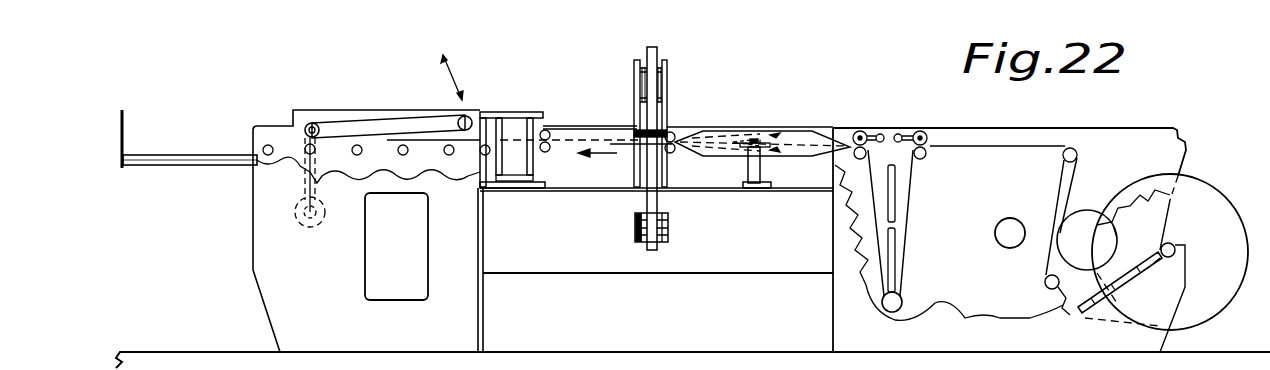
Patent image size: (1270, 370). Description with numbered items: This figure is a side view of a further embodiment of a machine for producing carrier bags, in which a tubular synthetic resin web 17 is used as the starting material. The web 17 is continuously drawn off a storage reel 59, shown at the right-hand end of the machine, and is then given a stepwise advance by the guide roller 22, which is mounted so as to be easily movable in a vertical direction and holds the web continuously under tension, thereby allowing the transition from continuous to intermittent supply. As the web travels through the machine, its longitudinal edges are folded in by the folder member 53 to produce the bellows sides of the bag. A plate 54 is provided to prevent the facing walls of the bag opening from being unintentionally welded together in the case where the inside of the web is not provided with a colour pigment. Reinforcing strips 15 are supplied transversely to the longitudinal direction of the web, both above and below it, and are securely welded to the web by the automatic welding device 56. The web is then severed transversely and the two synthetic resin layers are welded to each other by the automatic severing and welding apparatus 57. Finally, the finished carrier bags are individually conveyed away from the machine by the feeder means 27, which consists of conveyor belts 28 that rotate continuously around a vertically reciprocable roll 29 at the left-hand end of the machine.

The reinforcing strips 15 is at (652, 152).
The tubular synthetic resin web 17 is at (1063, 208).
The guide roller 22 is at (893, 300).
The feeder means 27 is at (362, 117).
The conveyor belts 28 is at (417, 118).
The vertically reciprocable roll 29 is at (467, 118).
The folder member 53 is at (747, 163).
The plate 54 is at (733, 142).
The automatic welding device 56 is at (636, 113).
The automatic welding apparatus 57 is at (530, 110).
The storage reel 59 is at (1203, 204).